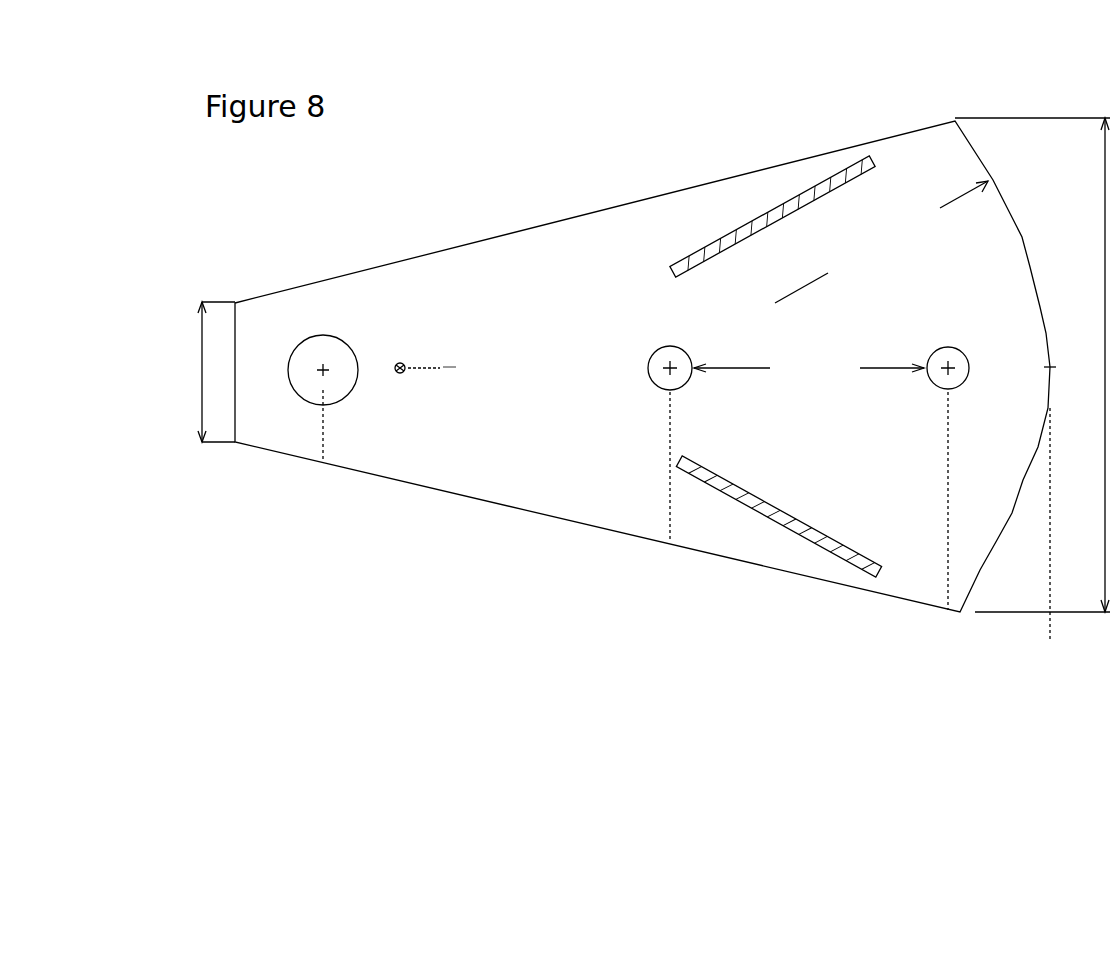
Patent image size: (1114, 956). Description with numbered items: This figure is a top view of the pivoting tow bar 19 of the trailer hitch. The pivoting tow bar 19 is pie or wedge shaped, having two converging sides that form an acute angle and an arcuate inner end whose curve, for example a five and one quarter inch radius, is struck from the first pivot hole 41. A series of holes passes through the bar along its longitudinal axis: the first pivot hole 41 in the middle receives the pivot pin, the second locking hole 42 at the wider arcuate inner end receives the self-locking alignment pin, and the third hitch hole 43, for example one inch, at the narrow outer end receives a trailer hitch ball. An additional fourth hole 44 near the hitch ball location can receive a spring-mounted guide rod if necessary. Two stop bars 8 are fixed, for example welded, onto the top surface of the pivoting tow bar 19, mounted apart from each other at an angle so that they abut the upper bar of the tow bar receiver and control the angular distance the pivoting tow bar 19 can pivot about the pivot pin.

The stop bars 8 is at (753, 220).
The pivoting tow bar 19 is at (523, 268).
The first pivot hole 41 is at (654, 347).
The second locking hole 42 is at (932, 355).
The third hitch hole 43 is at (310, 348).
The fourth hole 44 is at (400, 370).